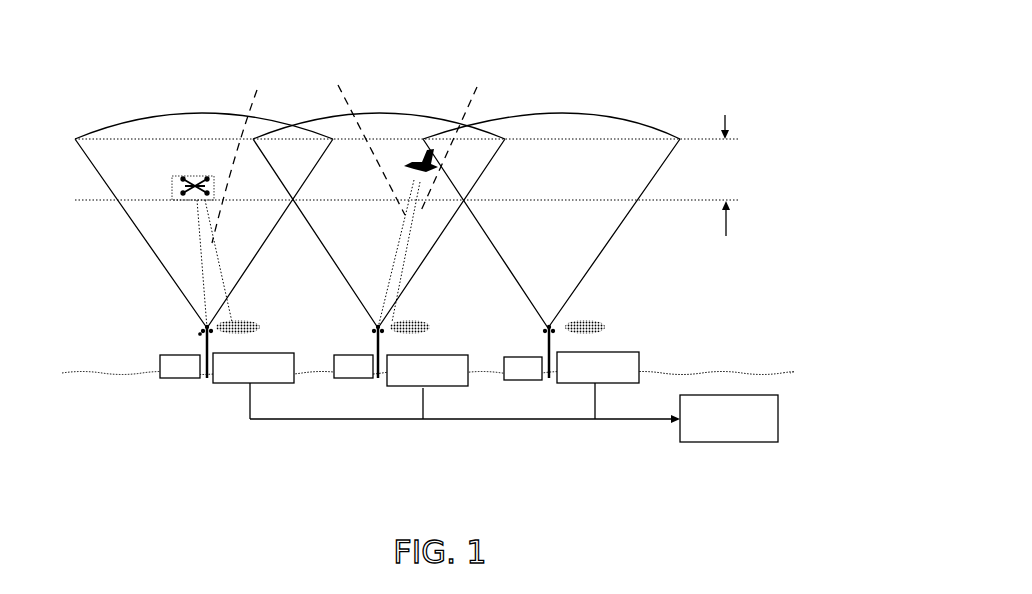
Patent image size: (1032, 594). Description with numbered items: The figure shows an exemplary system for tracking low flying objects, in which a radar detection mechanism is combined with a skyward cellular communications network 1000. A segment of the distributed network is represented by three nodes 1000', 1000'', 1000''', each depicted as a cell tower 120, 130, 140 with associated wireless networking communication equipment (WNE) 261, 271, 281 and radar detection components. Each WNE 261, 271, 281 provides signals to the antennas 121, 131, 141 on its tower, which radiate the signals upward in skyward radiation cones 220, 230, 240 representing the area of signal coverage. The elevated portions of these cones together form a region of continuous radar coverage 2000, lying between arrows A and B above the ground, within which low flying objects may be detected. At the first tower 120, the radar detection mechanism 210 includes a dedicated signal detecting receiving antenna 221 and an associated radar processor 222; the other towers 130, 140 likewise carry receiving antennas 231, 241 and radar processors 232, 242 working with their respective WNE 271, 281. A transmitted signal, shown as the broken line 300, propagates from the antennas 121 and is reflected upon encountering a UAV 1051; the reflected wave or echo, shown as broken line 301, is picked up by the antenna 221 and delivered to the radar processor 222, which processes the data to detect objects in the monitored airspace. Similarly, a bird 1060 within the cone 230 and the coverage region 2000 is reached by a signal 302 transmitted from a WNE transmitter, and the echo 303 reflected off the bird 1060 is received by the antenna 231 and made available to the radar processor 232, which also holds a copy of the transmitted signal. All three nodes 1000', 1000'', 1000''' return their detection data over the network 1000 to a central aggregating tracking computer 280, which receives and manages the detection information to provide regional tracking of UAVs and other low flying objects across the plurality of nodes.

The network communication system 1000 is at (587, 63).
The first node 1000' is at (186, 445).
The second node 1000'' is at (398, 445).
The third node 1000''' is at (592, 410).
The UAV 1051 is at (195, 185).
The bird 1060 is at (407, 163).
The region of continuous radar coverage 2000 is at (738, 152).
The cell tower 120 is at (204, 343).
The antenna 121 is at (199, 331).
The cell tower 130 is at (372, 331).
The antenna 131 is at (383, 343).
The cell tower 140 is at (552, 344).
The antenna 141 is at (542, 333).
The radar detection mechanism 210 is at (266, 337).
The skyward radiation cone 220 is at (100, 170).
The signal detecting receiving antenna 221 is at (236, 323).
The radar processor 222 is at (235, 383).
The skyward radiation cone 230 is at (387, 113).
The receiving antenna 231 is at (420, 326).
The radar processor 232 is at (443, 388).
The skyward radiation cone 240 is at (633, 117).
The receiving antenna 241 is at (603, 315).
The radar processor 242 is at (660, 357).
The wireless networking communication equipment 261 is at (175, 378).
The wireless networking communication equipment 271 is at (348, 380).
The wireless networking communication equipment 281 is at (520, 383).
The aggregating tracking computer 280 is at (778, 416).
The signal 300 is at (200, 252).
The reflected wave 301 is at (245, 154).
The signal 302 is at (360, 136).
The echo 303 is at (458, 137).